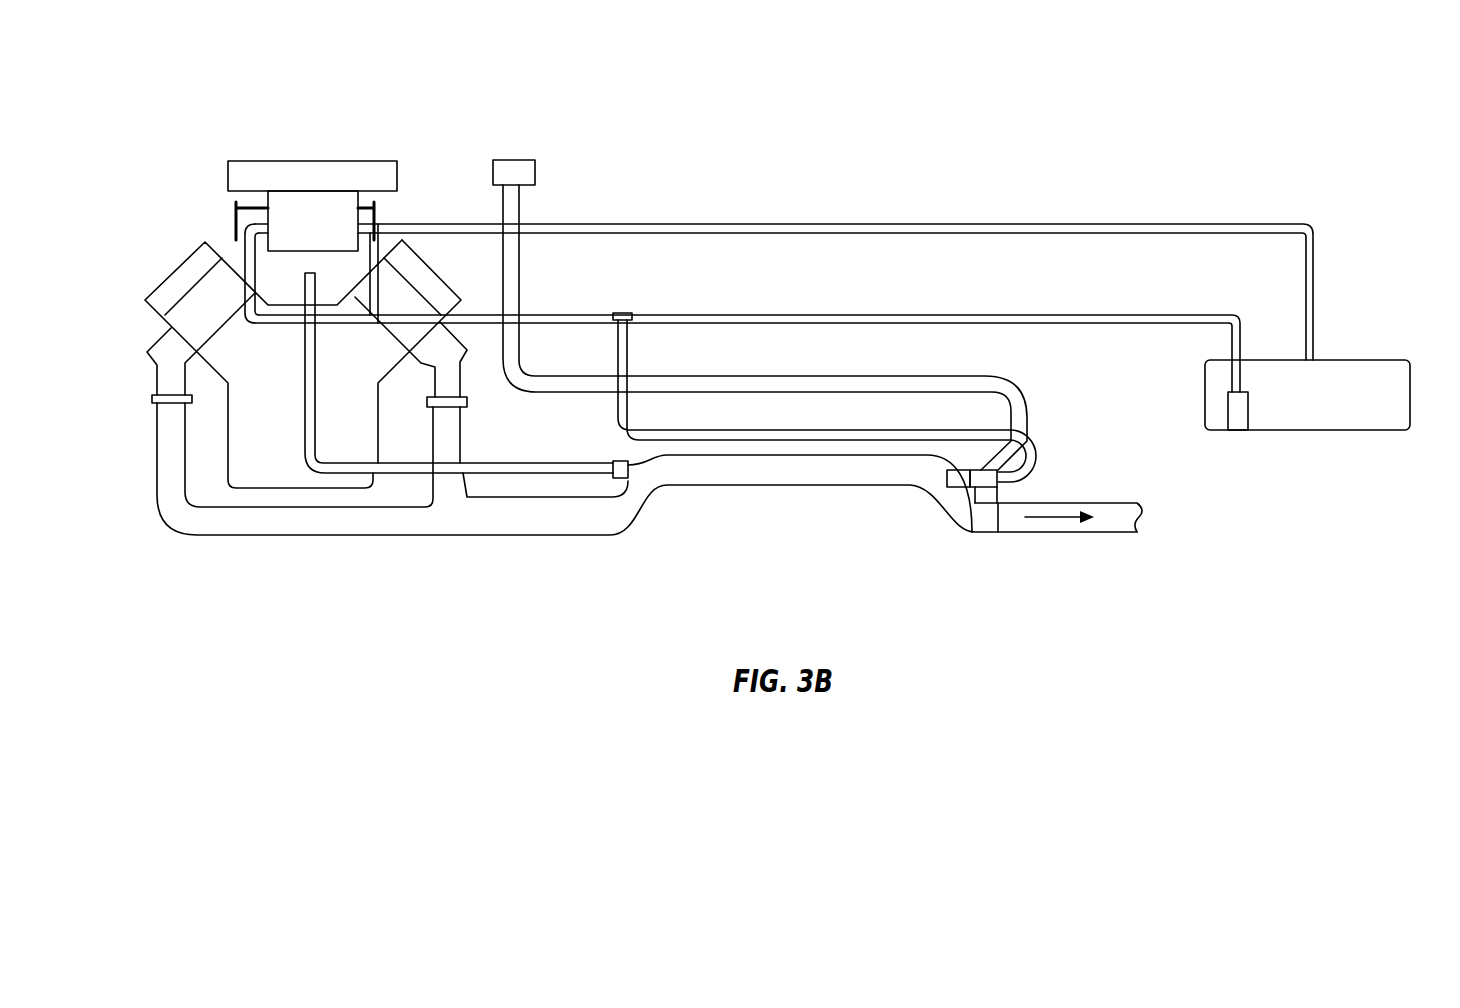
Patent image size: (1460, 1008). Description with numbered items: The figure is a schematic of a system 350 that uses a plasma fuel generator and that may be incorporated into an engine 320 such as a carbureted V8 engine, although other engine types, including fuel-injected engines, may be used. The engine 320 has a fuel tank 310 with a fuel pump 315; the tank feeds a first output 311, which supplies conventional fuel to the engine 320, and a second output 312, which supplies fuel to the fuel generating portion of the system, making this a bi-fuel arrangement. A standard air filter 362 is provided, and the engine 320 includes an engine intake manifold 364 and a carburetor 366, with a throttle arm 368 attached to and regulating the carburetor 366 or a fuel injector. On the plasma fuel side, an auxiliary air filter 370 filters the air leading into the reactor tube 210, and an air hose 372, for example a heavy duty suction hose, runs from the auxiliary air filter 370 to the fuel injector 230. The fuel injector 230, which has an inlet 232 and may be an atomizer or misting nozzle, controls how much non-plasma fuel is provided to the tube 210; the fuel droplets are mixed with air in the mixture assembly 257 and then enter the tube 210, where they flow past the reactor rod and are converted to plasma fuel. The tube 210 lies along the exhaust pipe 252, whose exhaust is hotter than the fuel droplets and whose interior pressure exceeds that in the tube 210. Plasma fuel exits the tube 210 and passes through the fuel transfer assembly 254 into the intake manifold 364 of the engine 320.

The system 350 is at (461, 62).
The air filter 362 is at (340, 162).
The carburetor 366 is at (278, 200).
The throttle arm 368 is at (236, 217).
The engine intake manifold 364 is at (362, 265).
The auxiliary air filter 370 is at (518, 165).
The air hose 372 is at (520, 278).
The first output 311 is at (1313, 332).
The second output 312 is at (1230, 357).
The fuel pump 315 is at (1240, 430).
The fuel tank 310 is at (1382, 423).
The inlet 232 is at (712, 430).
The engine 320 is at (238, 400).
The fuel transfer assembly 254 is at (402, 475).
The reactor tube 210 is at (616, 461).
The exhaust pipe 252 is at (518, 533).
The mixture assembly 257 is at (968, 515).
The fuel injector 230 is at (1010, 505).